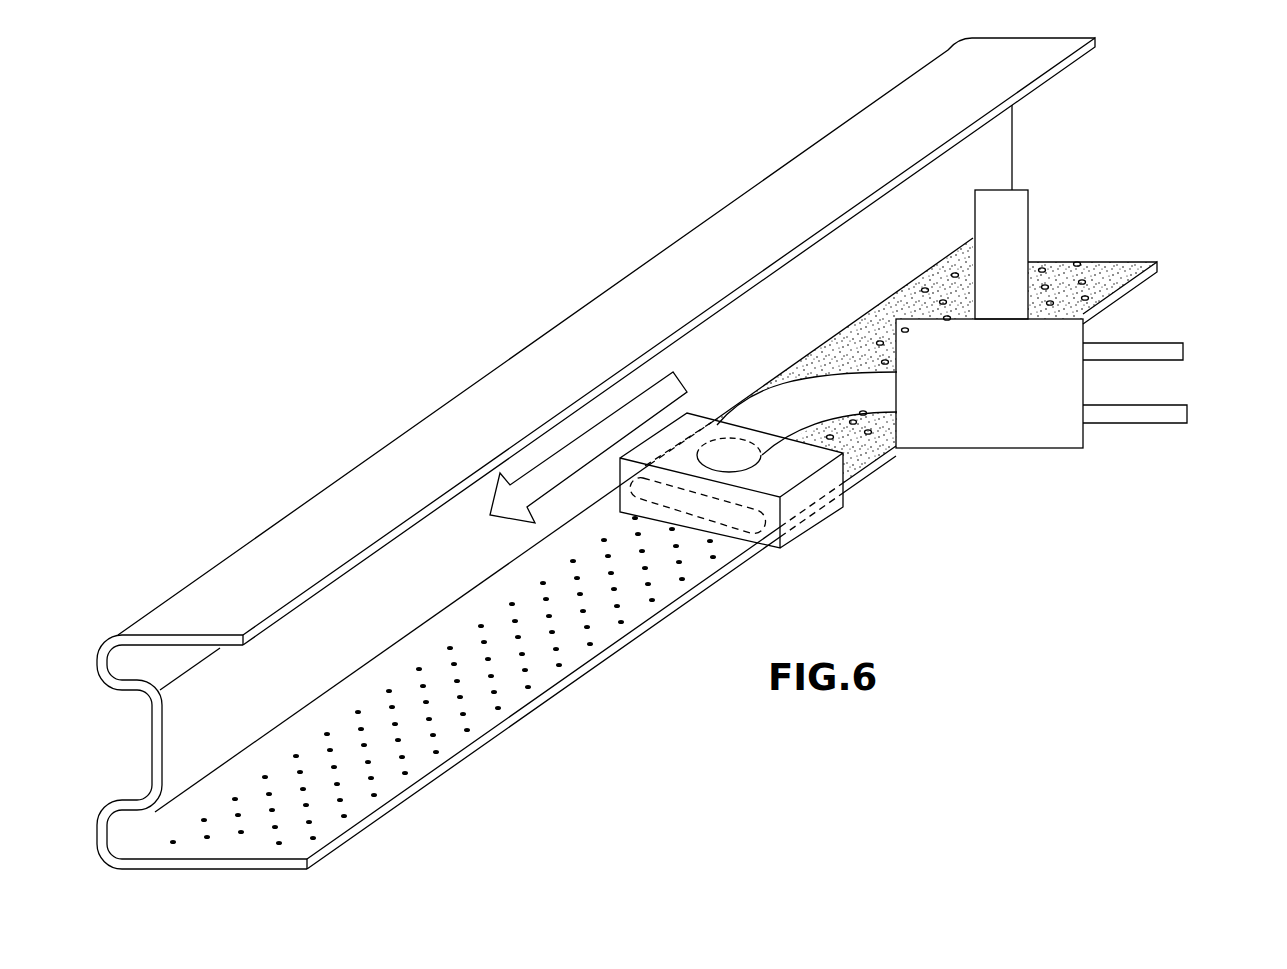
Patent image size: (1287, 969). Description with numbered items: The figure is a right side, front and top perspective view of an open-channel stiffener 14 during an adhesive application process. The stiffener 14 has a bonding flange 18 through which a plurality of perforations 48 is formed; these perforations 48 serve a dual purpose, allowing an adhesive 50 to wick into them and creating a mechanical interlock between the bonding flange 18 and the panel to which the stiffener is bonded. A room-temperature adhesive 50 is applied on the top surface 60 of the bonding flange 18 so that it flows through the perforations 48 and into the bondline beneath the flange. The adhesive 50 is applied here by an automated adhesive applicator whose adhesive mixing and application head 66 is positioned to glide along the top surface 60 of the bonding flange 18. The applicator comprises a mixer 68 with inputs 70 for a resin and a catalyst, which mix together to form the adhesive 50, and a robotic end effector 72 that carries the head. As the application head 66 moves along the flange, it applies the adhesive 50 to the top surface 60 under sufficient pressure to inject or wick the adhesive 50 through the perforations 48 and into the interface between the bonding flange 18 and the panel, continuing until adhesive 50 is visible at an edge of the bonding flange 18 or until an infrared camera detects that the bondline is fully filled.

The open-channel stiffener 14 is at (190, 612).
The bonding flange 18 is at (333, 833).
The perforations 48 is at (428, 719).
The adhesive 50 is at (1067, 268).
The top surface 60 is at (622, 605).
The adhesive mixing and application head 66 is at (823, 482).
The mixer 68 is at (1045, 432).
The inputs 70 is at (1180, 412).
The robotic end effector 72 is at (994, 212).